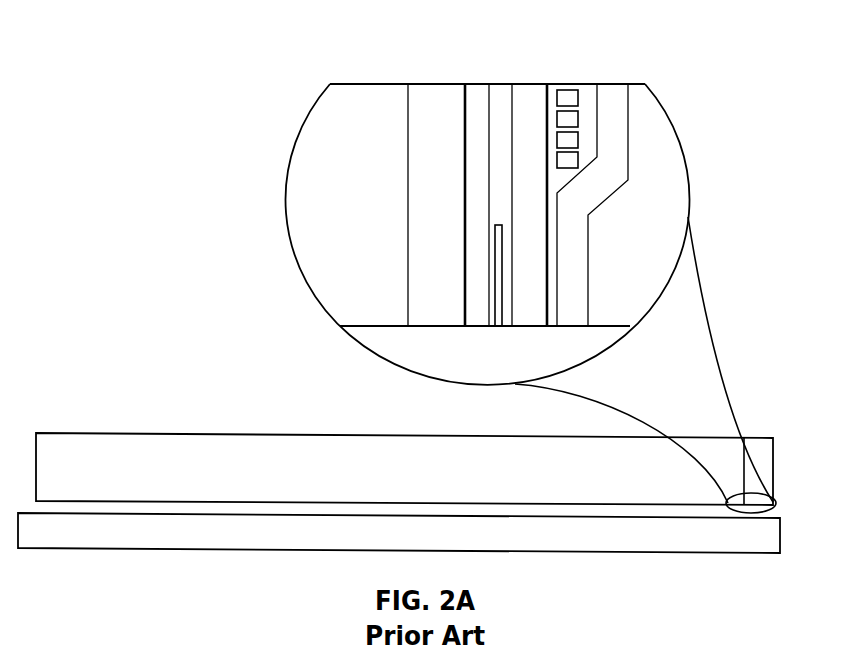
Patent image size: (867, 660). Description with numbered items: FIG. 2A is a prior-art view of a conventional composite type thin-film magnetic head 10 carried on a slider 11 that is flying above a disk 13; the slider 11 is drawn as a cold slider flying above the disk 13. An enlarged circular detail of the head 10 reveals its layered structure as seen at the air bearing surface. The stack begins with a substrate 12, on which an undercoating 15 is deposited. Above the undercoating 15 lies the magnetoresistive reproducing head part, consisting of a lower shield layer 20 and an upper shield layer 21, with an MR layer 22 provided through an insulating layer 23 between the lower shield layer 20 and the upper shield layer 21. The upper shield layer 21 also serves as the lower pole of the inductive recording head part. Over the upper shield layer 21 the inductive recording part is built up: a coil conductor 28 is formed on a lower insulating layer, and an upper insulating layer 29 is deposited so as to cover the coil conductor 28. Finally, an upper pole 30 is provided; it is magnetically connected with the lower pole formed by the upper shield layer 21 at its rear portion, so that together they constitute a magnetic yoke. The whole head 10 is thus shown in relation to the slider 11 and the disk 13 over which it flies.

The composite type thin-film magnetic head 10 is at (292, 106).
The slider 11 is at (215, 433).
The substrate 12 is at (363, 92).
The disk 13 is at (200, 550).
The undercoating 15 is at (430, 92).
The lower shield layer 20 is at (473, 92).
The upper shield layer 21 is at (527, 92).
The MR layer 22 is at (498, 326).
The insulating layer 23 is at (500, 92).
The coil conductor 28 is at (568, 96).
The upper insulating layer 29 is at (588, 92).
The upper pole 30 is at (617, 92).